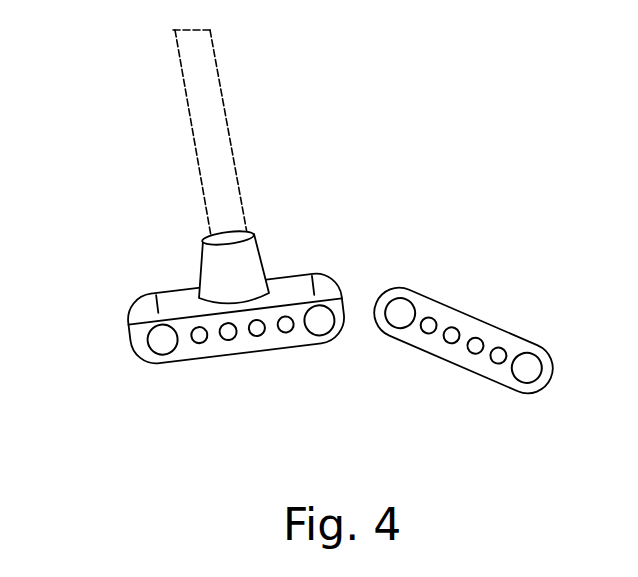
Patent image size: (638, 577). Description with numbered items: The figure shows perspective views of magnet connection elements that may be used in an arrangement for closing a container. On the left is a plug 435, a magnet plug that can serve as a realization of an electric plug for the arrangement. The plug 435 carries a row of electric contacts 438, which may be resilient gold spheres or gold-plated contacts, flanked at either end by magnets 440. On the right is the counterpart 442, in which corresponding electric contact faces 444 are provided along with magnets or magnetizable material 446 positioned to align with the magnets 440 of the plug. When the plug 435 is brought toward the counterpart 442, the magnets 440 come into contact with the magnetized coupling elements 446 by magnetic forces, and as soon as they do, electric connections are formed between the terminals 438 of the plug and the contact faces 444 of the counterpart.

The plug 435 is at (193, 318).
The electric contacts 438 is at (286, 328).
The magnets 440 is at (162, 342).
The counterpart 442 is at (478, 337).
The electric contact faces 444 is at (498, 358).
The magnets or magnetizable material 446 is at (398, 315).